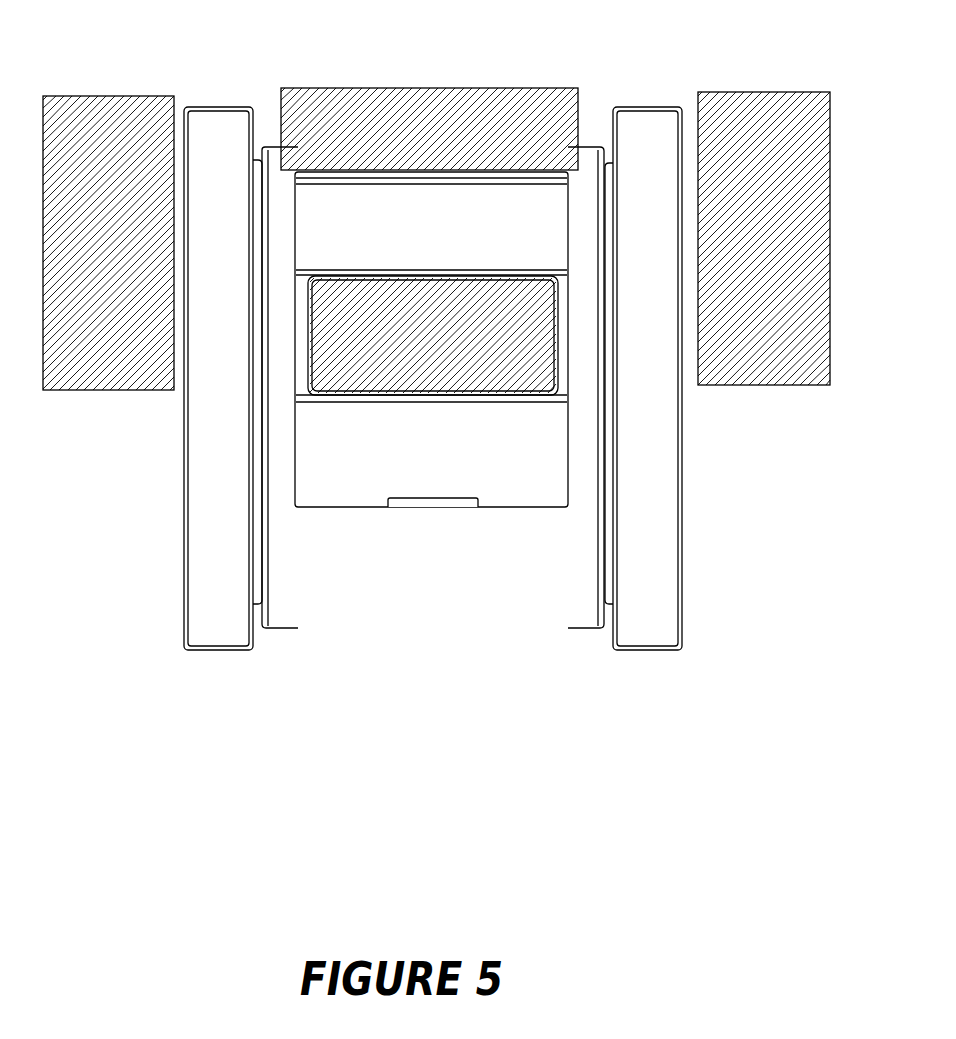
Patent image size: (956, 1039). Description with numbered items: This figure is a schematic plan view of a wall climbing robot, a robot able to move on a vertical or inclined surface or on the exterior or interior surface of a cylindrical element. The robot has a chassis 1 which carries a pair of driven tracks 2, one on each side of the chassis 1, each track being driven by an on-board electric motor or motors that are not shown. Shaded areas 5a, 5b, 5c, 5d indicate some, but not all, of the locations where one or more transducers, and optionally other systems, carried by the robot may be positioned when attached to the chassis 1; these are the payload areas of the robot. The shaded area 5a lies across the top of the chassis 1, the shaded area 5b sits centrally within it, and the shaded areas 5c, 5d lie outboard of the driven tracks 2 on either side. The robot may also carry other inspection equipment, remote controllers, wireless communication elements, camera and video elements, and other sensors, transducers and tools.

The chassis 1 is at (373, 550).
The driven tracks 2 is at (222, 112).
The shaded area 5a is at (425, 88).
The shaded area 5b is at (345, 385).
The shaded area 5c is at (758, 385).
The shaded area 5d is at (82, 390).